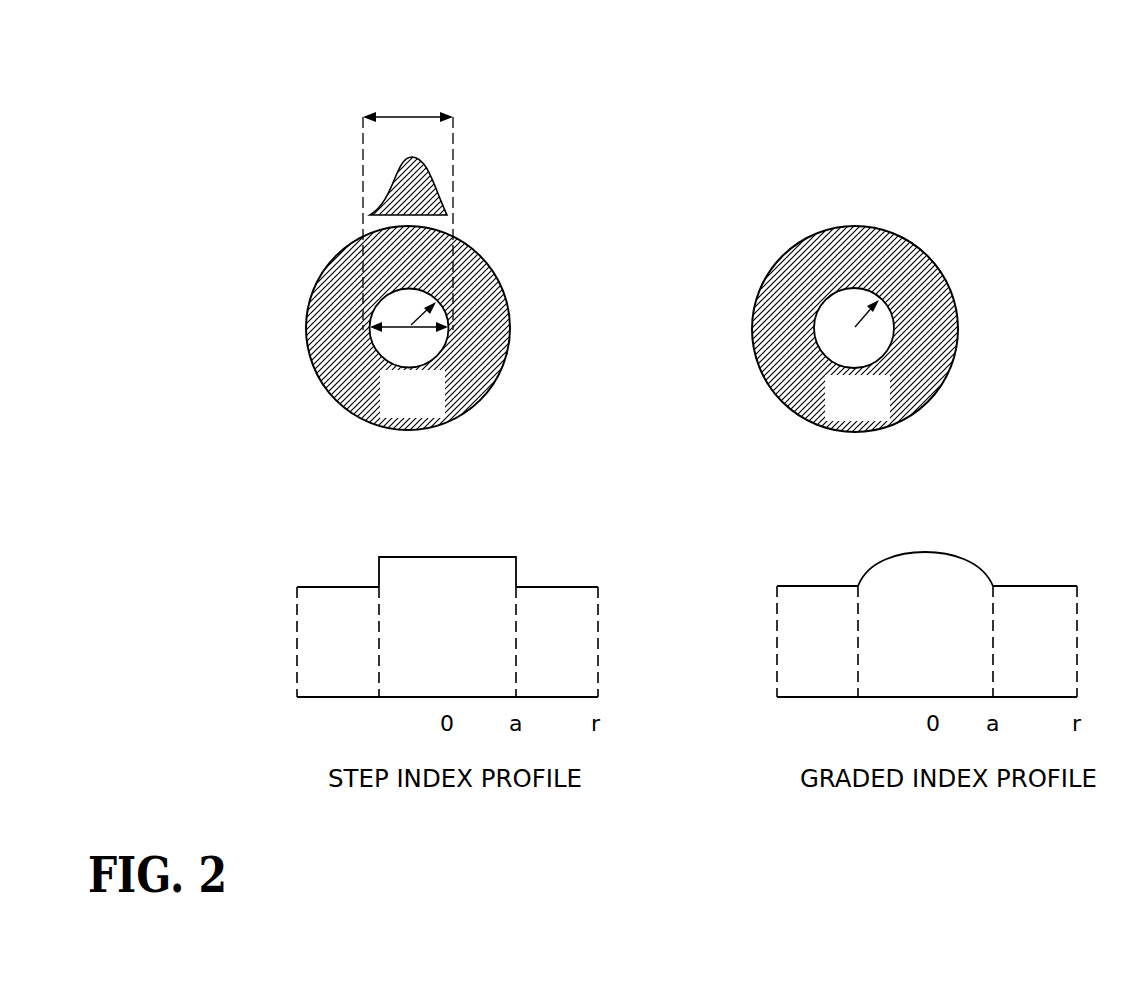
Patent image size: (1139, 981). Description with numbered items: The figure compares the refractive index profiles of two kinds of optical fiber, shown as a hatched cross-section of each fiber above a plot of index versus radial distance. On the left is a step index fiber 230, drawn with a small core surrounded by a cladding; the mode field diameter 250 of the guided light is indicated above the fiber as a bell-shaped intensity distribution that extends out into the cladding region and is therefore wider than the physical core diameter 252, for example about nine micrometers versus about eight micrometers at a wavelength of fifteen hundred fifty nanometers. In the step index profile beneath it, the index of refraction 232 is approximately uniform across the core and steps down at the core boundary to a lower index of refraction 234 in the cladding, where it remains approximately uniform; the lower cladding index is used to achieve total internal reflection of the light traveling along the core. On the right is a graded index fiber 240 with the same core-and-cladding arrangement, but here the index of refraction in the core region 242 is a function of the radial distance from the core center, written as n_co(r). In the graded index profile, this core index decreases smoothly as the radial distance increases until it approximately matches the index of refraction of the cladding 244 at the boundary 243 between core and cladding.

The step index fiber 230 is at (323, 218).
The mode field diameter 250 is at (406, 112).
The physical core diameter 252 is at (341, 406).
The graded index fiber 240 is at (941, 230).
The index of refraction 232 is at (482, 557).
The lower index of refraction 234 is at (583, 586).
The index of refraction in the core region 242 is at (961, 552).
The boundary 243 is at (994, 583).
The index of refraction of the cladding 244 is at (1066, 585).